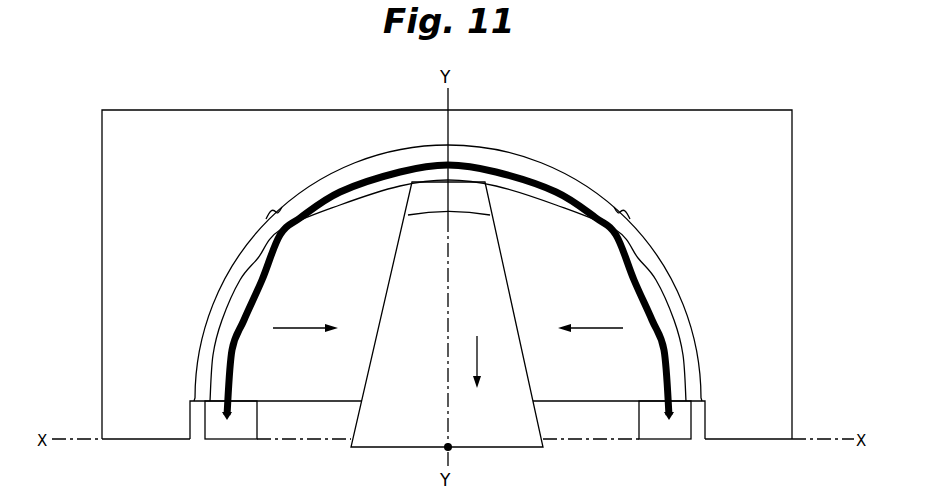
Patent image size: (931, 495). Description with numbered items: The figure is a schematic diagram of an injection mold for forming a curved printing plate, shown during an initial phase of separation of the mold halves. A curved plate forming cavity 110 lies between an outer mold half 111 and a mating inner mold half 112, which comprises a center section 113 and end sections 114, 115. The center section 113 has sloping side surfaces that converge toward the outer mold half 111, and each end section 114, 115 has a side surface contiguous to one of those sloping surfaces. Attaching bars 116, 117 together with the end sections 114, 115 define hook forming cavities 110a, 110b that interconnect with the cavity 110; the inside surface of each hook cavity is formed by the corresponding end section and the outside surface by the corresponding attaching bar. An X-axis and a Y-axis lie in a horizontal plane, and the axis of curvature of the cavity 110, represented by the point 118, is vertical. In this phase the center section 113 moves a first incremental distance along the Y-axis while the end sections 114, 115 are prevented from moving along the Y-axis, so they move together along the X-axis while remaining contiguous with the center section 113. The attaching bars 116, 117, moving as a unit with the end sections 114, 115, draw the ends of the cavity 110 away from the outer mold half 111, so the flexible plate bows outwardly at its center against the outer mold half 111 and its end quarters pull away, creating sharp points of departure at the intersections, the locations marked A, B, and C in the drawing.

The curved plate forming cavity 110 is at (464, 292).
The hook forming cavity 110a is at (240, 403).
The hook forming cavity 110b is at (660, 408).
The outer mold half 111 is at (705, 101).
The inner mold half 112 is at (492, 318).
The center section 113 is at (521, 448).
The end section 114 is at (293, 407).
The end section 115 is at (568, 405).
The attaching bar 116 is at (230, 439).
The attaching bar 117 is at (667, 432).
The point 118 is at (449, 449).
The point A is at (451, 139).
The point B is at (212, 298).
The point C is at (687, 314).